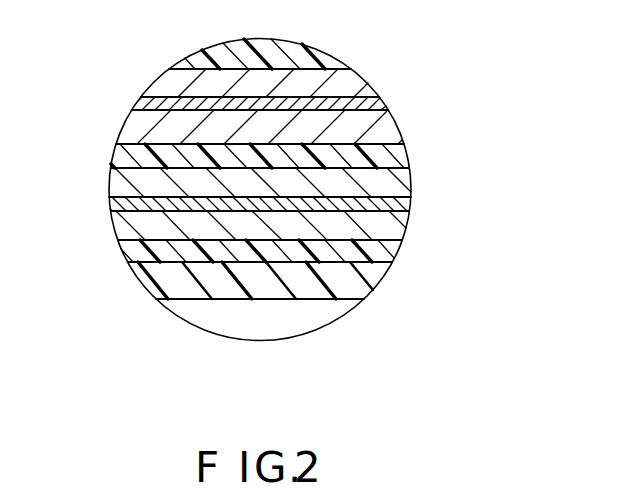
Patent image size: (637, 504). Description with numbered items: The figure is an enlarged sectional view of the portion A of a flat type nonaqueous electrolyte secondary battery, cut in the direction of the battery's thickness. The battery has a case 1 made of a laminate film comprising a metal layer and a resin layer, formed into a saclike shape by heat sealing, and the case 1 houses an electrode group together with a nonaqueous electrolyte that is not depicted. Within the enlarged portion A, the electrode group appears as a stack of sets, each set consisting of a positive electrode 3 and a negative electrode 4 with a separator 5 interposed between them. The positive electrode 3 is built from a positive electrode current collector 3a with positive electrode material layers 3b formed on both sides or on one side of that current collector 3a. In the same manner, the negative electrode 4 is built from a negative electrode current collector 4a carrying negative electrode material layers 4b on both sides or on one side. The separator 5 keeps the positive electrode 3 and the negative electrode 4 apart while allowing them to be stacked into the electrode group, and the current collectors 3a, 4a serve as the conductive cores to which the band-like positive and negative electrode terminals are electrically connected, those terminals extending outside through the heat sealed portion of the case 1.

The case 1 is at (372, 290).
The positive electrode 3 is at (319, 104).
The positive electrode current collector 3a is at (383, 102).
The positive electrode material layer 3b is at (358, 82).
The negative electrode 4 is at (307, 213).
The negative electrode current collector 4a is at (400, 203).
The negative electrode material layer 4b is at (400, 185).
The separator 5 is at (200, 62).
The portion A is at (305, 338).